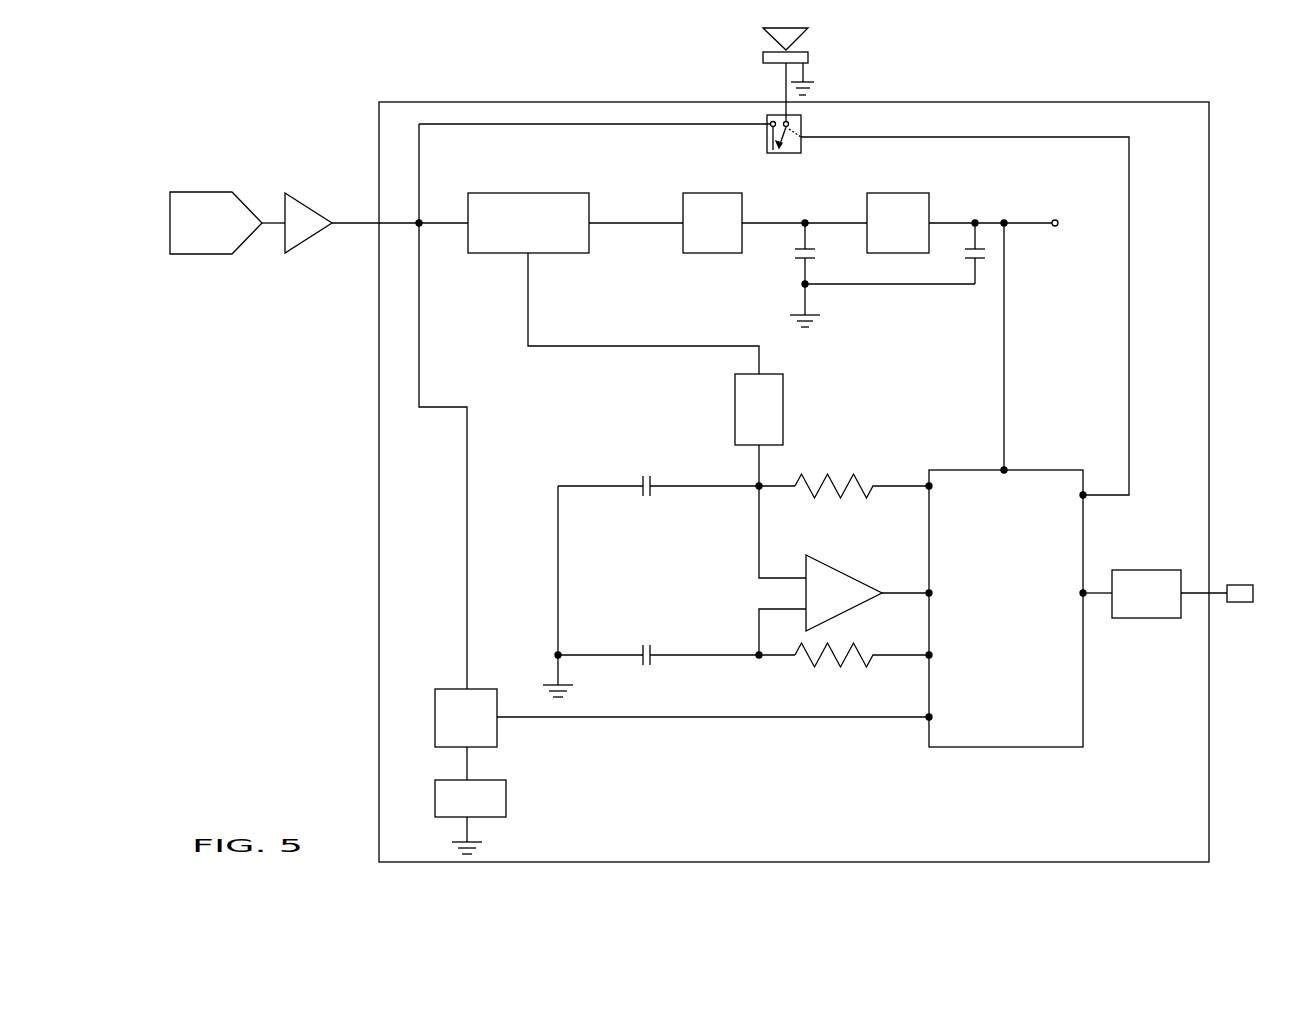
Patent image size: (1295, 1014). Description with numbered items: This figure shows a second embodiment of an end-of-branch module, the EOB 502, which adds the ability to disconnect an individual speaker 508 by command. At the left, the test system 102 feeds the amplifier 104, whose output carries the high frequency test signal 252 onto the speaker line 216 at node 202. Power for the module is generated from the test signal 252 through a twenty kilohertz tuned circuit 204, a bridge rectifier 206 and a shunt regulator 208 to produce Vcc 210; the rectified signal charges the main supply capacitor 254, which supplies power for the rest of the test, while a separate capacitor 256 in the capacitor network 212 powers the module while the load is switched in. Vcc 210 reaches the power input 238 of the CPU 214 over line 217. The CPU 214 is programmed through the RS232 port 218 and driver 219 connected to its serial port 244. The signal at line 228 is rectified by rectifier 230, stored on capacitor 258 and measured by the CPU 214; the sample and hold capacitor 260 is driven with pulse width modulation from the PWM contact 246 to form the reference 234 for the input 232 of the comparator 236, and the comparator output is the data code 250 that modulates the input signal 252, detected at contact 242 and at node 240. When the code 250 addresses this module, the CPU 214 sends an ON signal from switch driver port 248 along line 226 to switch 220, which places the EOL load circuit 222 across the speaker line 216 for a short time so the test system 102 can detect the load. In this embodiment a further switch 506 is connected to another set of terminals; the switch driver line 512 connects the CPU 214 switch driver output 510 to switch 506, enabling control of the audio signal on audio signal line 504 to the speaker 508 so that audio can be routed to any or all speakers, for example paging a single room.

The test system 102 is at (209, 203).
The amplifier 104 is at (308, 225).
The input node 202 is at (447, 227).
The tuned circuit 204 is at (564, 203).
The bridge rectifier 206 is at (740, 197).
The shunt regulator 208 is at (907, 210).
The Vcc 210 is at (1060, 221).
The capacitor network 212 is at (886, 297).
The CPU 214 is at (1037, 475).
The speaker line 216 is at (421, 340).
The line 217 is at (1005, 388).
The RS232 port 218 is at (1245, 590).
The driver 219 is at (1120, 580).
The switch 220 is at (445, 696).
The EOL load circuit 222 is at (445, 786).
The line 226 is at (607, 718).
The line 228 is at (623, 347).
The rectifier 230 is at (745, 400).
The input 232 is at (758, 538).
The reference 234 is at (758, 627).
The comparator 236 is at (813, 567).
The power input 238 is at (1003, 467).
The controller input node 240 is at (927, 483).
The contact 242 is at (932, 592).
The serial port 244 is at (1082, 592).
The PWM contact 246 is at (933, 655).
The switch driver port 248 is at (932, 717).
The code 250 is at (908, 610).
The test signal 252 is at (360, 240).
The main supply capacitor 254 is at (795, 263).
The capacitor 256 is at (978, 260).
The capacitor 258 is at (637, 478).
The sample and hold capacitor 260 is at (637, 645).
The EOB 502 is at (383, 415).
The audio signal line 504 is at (568, 123).
The switch 506 is at (775, 155).
The speaker 508 is at (808, 52).
The switch driver output 510 is at (1082, 497).
The switch driver line 512 is at (1129, 312).